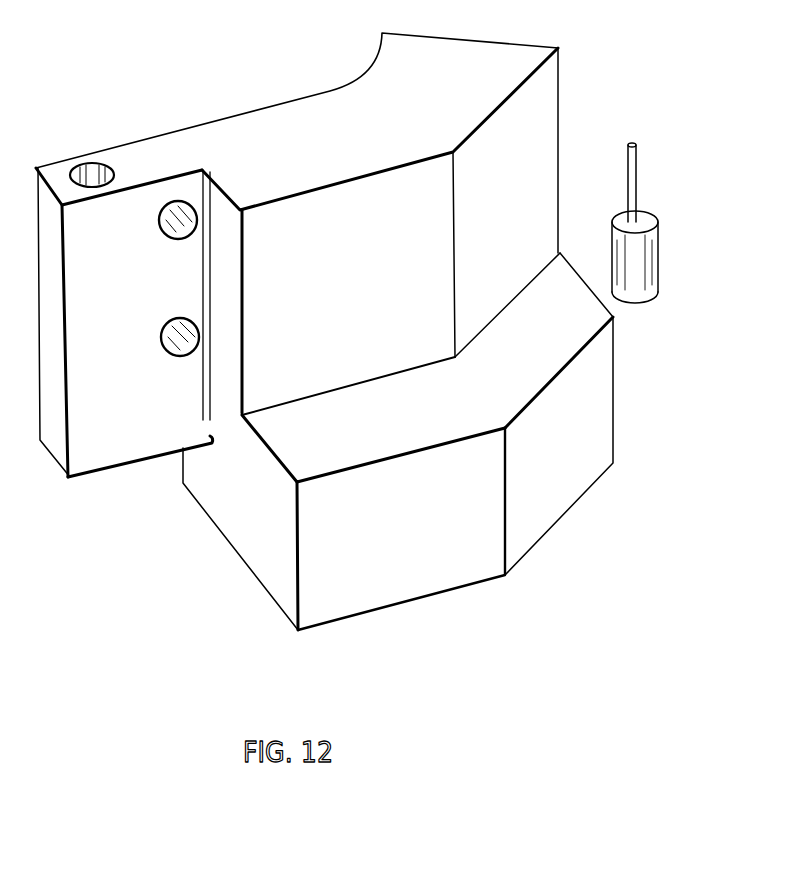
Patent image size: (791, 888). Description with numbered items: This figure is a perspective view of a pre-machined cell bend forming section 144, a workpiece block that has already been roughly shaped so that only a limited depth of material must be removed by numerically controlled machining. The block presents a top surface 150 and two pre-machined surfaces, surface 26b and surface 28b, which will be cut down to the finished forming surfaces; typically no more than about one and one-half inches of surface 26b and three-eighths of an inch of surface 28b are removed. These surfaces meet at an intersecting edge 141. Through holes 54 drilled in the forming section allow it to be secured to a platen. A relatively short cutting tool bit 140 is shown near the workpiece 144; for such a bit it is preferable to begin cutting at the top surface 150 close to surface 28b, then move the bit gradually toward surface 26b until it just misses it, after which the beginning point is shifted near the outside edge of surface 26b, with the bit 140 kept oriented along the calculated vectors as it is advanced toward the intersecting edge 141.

The top surface 150 is at (463, 50).
The surface 28b is at (548, 100).
The through holes 54 is at (97, 163).
The cutting tool bit 140 is at (648, 253).
The intersecting edge 141 is at (477, 338).
The surface 26b is at (385, 447).
The pre-machined cell bend forming section 144 is at (545, 547).